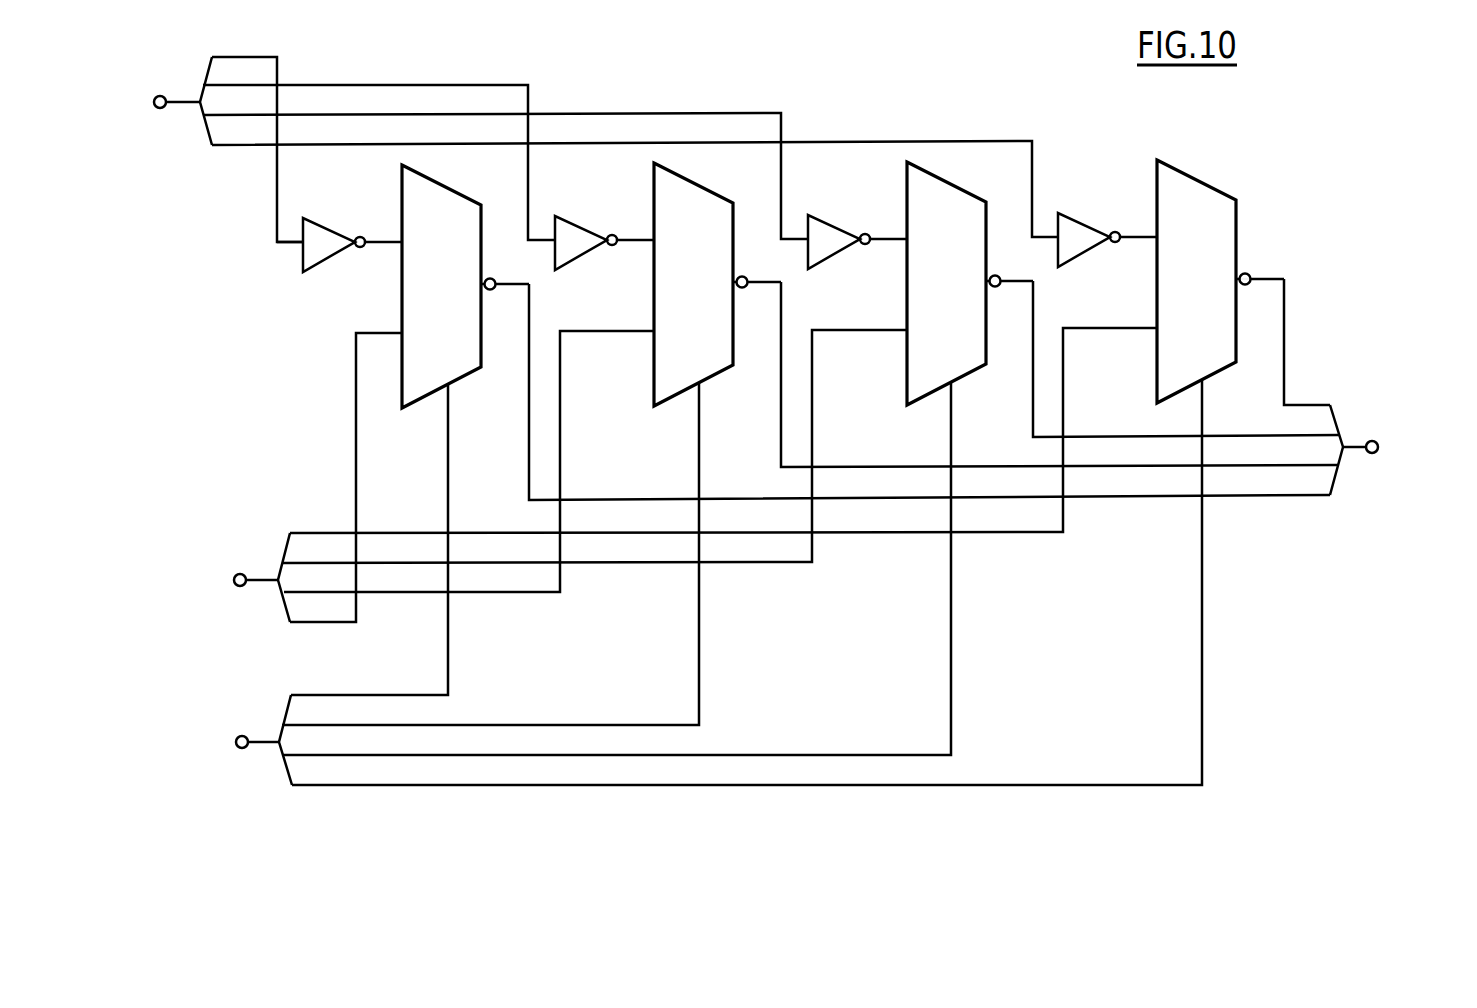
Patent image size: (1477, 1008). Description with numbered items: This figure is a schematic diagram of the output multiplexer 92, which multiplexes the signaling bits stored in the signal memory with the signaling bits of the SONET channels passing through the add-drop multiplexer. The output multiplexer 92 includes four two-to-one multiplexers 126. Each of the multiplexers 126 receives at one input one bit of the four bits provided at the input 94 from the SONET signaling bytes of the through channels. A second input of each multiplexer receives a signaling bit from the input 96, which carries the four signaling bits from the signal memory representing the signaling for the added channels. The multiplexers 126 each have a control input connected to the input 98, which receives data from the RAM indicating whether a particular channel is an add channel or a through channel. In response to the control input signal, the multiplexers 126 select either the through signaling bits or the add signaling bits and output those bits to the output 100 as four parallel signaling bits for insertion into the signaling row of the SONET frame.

The output multiplexer 92 is at (815, 80).
The input 94 is at (160, 95).
The input 96 is at (240, 574).
The input 98 is at (242, 736).
The output 100 is at (1372, 441).
The 2:1 multiplexer 126 is at (401, 199).